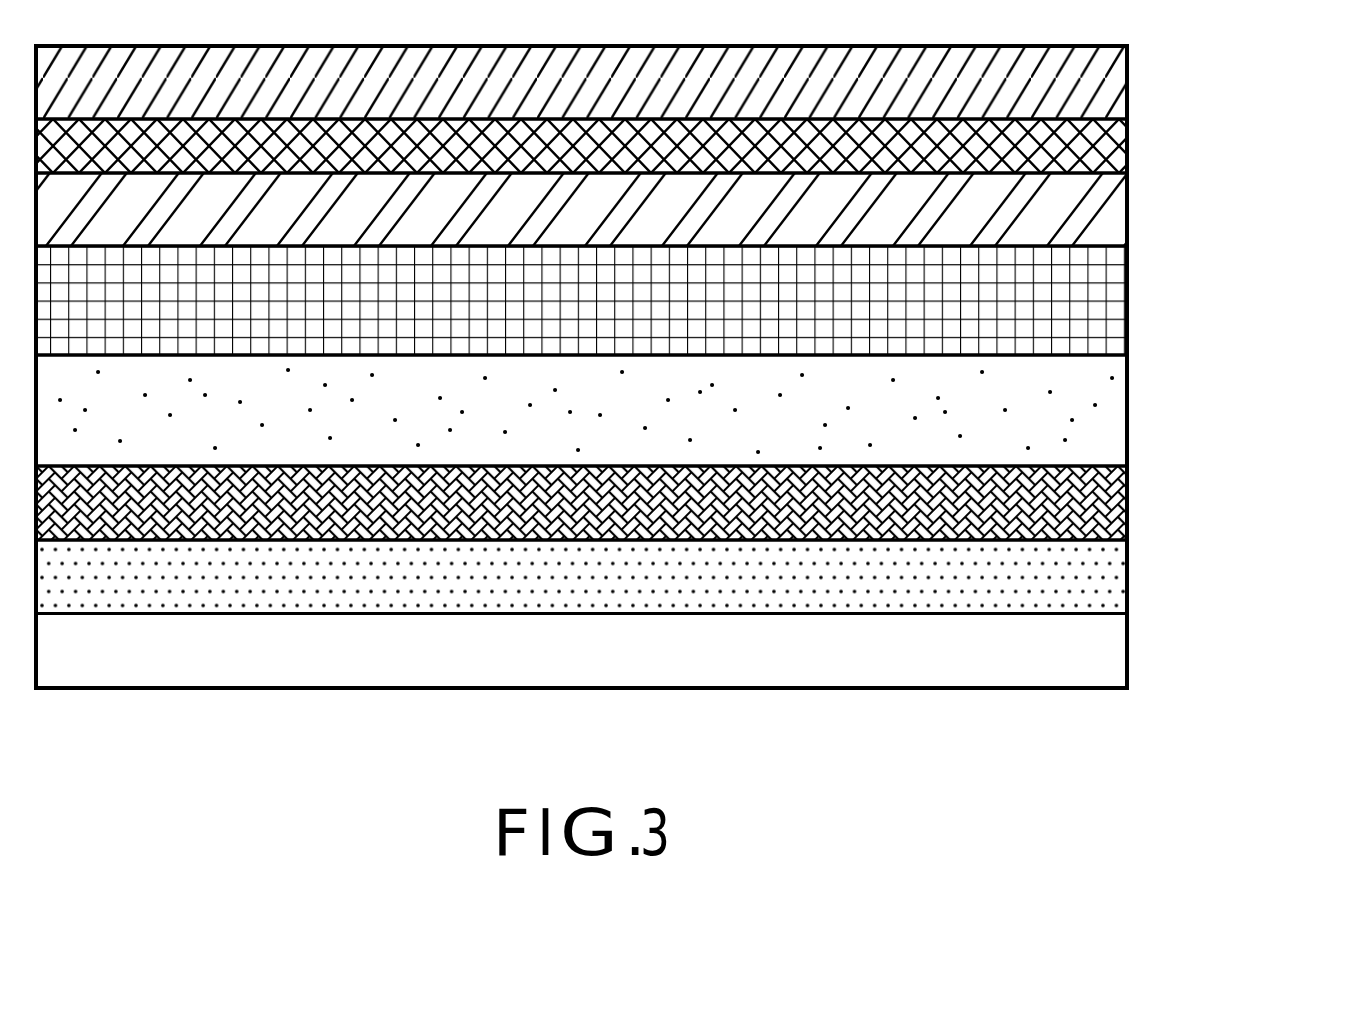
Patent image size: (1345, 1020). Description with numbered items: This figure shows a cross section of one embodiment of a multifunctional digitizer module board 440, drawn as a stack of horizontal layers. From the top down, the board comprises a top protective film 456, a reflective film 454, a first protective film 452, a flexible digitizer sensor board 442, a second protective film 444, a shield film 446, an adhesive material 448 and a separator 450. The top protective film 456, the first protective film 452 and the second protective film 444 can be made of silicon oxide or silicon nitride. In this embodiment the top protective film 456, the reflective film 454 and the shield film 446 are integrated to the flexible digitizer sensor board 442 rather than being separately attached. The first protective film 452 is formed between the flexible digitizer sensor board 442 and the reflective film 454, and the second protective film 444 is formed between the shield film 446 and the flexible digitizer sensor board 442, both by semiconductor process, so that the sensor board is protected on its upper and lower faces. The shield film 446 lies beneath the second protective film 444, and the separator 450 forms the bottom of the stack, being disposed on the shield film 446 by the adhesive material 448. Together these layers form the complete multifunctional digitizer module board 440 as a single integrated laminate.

The multifunctional digitizer module board 440 is at (1333, 780).
The top protective film 456 is at (1097, 83).
The reflective film 454 is at (1097, 146).
The first protective film 452 is at (1097, 209).
The flexible digitizer sensor board 442 is at (1097, 302).
The second protective film 444 is at (1095, 414).
The shield film 446 is at (1097, 506).
The adhesive material 448 is at (1097, 579).
The separator 450 is at (1097, 654).